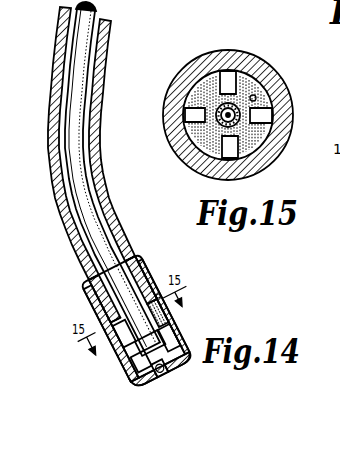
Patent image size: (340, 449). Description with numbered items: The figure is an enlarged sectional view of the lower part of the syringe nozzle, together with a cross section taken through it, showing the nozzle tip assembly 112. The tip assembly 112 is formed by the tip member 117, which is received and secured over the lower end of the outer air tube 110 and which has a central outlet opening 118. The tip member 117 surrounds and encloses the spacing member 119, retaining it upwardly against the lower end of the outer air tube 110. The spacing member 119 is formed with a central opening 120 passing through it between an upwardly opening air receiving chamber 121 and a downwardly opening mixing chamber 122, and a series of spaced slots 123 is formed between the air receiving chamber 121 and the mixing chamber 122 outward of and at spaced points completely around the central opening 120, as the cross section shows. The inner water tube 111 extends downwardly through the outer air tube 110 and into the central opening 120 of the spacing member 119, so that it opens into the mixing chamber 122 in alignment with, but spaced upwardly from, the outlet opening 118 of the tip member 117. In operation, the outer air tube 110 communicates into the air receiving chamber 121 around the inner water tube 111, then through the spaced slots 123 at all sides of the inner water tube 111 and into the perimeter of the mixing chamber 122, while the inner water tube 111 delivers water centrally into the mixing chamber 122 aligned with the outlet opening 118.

In FIG. 14, the outer air tube 110 is at (59, 199).
In FIG. 14, the inner water tube 111 is at (90, 207).
In FIG. 15, the inner water tube 111 is at (222, 110).
In FIG. 14, the tip assembly 112 is at (83, 292).
In FIG. 14, the tip member 117 is at (122, 368).
In FIG. 15, the tip member 117 is at (173, 143).
In FIG. 14, the outlet opening 118 is at (158, 369).
In FIG. 14, the spacing member 119 is at (172, 315).
In FIG. 15, the spacing member 119 is at (257, 88).
In FIG. 14, the central opening 120 is at (158, 338).
In FIG. 15, the central opening 120 is at (218, 107).
In FIG. 14, the air receiving chamber 121 is at (150, 300).
In FIG. 15, the air receiving chamber 121 is at (256, 98).
In FIG. 14, the mixing chamber 122 is at (152, 378).
In FIG. 14, the spaced slots 123 is at (128, 346).
In FIG. 15, the spaced slots 123 is at (228, 80).